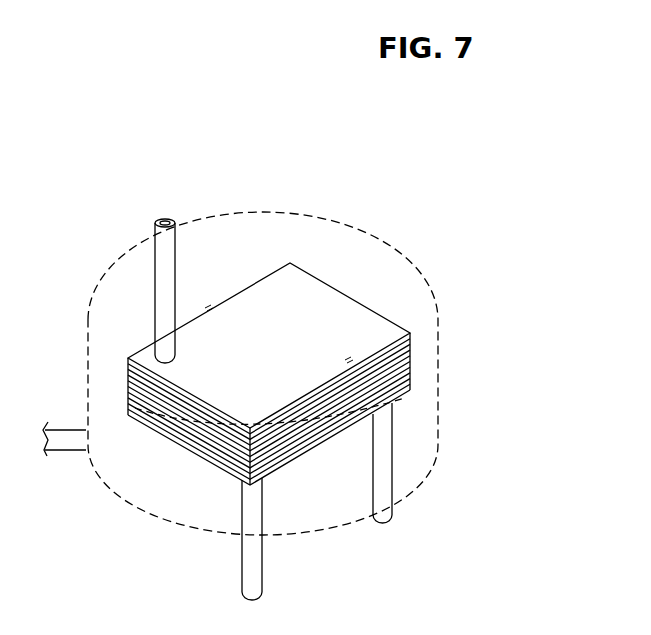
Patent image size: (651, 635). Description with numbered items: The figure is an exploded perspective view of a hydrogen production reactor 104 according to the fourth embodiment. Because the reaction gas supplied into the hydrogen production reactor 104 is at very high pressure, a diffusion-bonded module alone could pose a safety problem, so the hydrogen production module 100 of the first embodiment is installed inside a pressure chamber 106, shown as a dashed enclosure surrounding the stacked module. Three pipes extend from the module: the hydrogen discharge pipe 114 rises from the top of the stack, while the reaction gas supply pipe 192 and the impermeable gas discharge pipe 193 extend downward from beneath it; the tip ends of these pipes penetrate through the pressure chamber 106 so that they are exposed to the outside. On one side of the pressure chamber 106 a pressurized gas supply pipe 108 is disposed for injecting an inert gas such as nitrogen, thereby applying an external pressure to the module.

The hydrogen production reactor 104 is at (427, 128).
The pressure chamber 106 is at (390, 252).
The hydrogen production module 100 is at (375, 303).
The hydrogen discharge pipe 114 is at (168, 247).
The reaction gas supply pipe 192 is at (389, 515).
The impermeable gas discharge pipe 193 is at (256, 558).
The pressurized gas supply pipe 108 is at (70, 446).